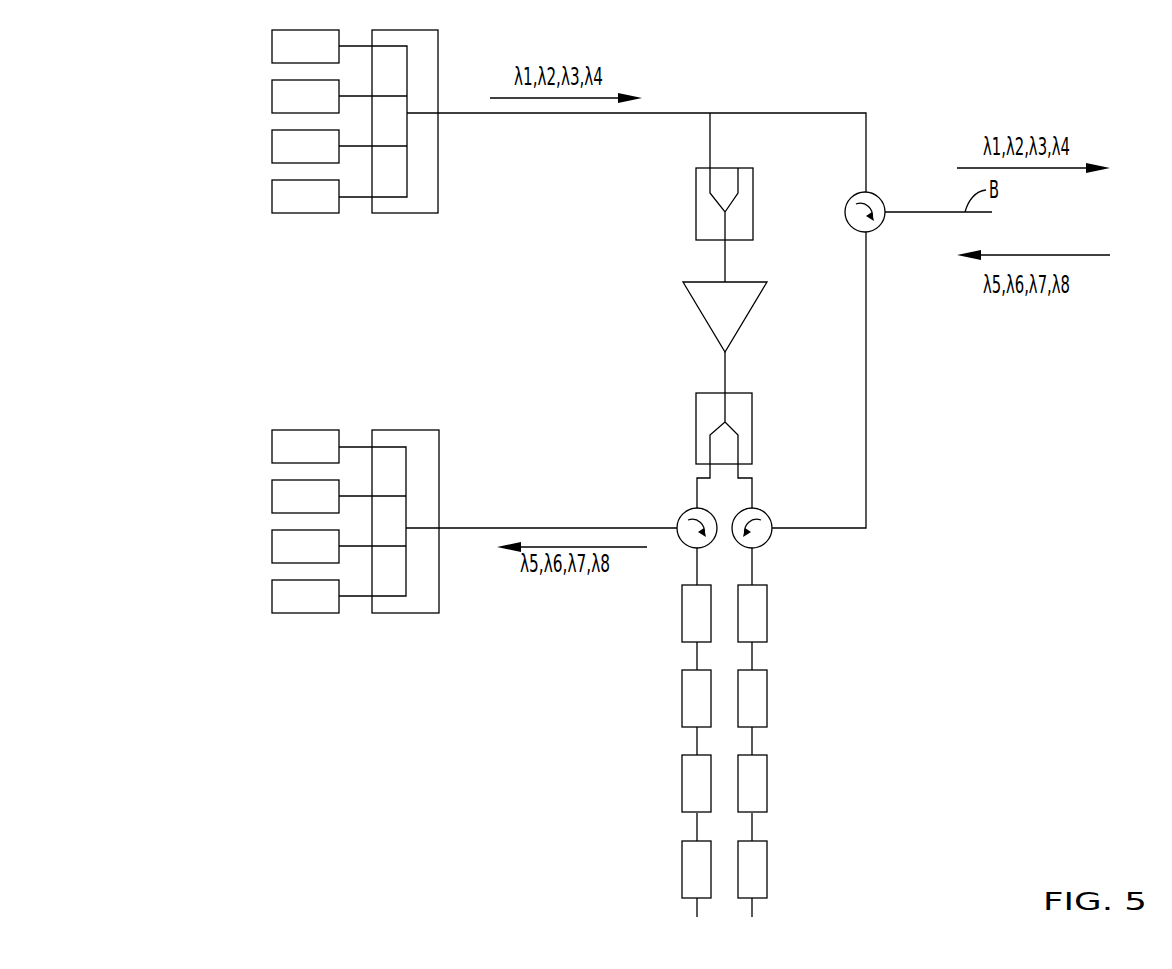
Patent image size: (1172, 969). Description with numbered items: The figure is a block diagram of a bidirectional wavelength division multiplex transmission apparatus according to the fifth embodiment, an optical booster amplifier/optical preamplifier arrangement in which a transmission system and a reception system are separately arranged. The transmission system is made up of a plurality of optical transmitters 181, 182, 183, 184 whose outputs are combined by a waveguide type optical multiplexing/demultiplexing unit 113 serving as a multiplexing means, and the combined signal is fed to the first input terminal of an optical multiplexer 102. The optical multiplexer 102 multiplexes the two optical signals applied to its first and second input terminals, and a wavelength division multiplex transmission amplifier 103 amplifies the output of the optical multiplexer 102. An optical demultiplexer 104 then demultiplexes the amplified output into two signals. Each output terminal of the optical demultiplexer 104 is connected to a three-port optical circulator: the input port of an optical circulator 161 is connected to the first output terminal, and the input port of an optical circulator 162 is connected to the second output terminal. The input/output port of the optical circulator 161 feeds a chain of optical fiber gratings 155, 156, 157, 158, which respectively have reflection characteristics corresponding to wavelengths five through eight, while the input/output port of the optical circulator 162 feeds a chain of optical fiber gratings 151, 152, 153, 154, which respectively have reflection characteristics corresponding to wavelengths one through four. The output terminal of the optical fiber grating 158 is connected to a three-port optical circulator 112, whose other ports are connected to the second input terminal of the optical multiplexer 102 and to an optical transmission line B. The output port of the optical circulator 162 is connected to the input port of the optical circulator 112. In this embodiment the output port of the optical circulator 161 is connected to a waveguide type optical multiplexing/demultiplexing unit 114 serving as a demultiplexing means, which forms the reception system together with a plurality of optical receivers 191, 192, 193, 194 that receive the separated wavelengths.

The optical multiplexer 102 is at (787, 181).
The wavelength division multiplex transmission amplifier 103 is at (697, 305).
The optical demultiplexer 104 is at (696, 417).
The optical circulator 112 is at (880, 197).
The waveguide type optical multiplexing/demultiplexing unit 113 is at (397, 213).
The waveguide type optical multiplexing/demultiplexing unit 114 is at (393, 613).
The optical fiber grating 151 is at (767, 612).
The optical fiber grating 152 is at (767, 697).
The optical fiber grating 153 is at (767, 782).
The optical fiber grating 154 is at (767, 868).
The optical fiber grating 155 is at (682, 622).
The optical fiber grating 156 is at (682, 707).
The optical fiber grating 157 is at (682, 792).
The optical fiber grating 158 is at (682, 878).
The optical circulator 161 is at (679, 519).
The optical circulator 162 is at (763, 511).
The optical transmitter 181 is at (272, 55).
The optical transmitter 182 is at (272, 105).
The optical transmitter 183 is at (272, 155).
The optical transmitter 184 is at (272, 205).
The optical receiver 191 is at (272, 456).
The optical receiver 192 is at (272, 506).
The optical receiver 193 is at (272, 556).
The optical receiver 194 is at (272, 606).